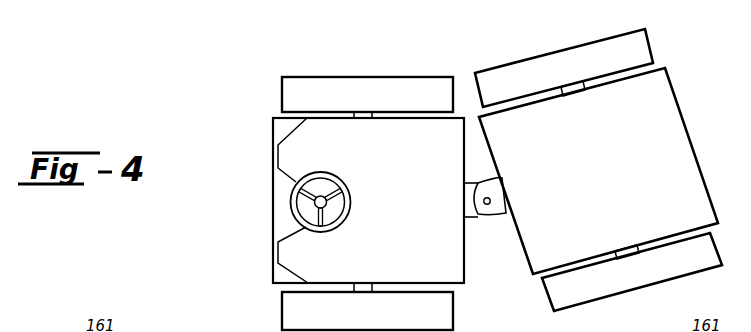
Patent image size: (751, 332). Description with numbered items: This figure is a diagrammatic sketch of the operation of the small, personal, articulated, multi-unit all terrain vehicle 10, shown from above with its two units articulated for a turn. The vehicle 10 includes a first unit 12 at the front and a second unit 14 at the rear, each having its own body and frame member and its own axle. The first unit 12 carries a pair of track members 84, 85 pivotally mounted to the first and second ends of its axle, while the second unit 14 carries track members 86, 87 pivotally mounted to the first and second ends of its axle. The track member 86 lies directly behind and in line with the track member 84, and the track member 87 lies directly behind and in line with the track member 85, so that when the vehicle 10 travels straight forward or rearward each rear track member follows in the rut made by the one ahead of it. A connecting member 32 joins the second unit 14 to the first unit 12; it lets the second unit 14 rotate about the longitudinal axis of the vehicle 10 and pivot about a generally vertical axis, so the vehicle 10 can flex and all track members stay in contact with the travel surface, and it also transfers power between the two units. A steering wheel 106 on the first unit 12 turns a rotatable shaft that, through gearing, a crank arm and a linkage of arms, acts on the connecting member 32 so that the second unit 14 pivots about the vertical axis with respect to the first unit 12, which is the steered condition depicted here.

The all terrain vehicle 10 is at (234, 188).
The first unit 12 is at (273, 137).
The second unit 14 is at (686, 130).
The connecting member 32 is at (498, 218).
The track member 84 is at (453, 305).
The track member 85 is at (375, 77).
The track member 86 is at (722, 260).
The track member 87 is at (520, 62).
The steering wheel 106 is at (350, 207).